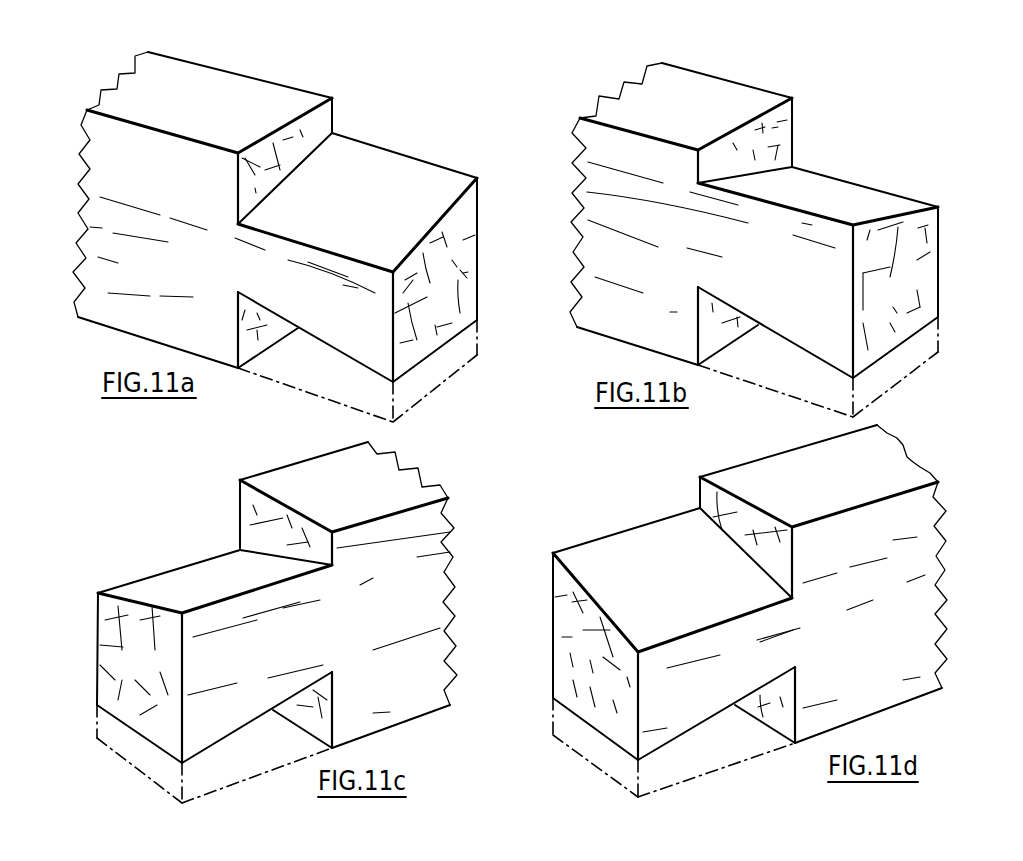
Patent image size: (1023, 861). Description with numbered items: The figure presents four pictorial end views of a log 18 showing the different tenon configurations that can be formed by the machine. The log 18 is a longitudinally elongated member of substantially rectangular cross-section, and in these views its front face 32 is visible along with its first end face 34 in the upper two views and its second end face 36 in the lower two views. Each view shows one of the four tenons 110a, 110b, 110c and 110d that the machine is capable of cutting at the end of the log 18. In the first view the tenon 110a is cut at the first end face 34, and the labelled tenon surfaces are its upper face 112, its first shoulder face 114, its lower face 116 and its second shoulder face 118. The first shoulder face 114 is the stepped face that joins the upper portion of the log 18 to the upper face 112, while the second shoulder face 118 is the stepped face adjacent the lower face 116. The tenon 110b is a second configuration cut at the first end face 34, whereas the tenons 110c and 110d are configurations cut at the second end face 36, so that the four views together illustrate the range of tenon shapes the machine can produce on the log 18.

In FIG. 11A, the log 18 is at (287, 96).
In FIG. 11B, the log 18 is at (603, 117).
In FIG. 11C, the log 18 is at (275, 475).
In FIG. 11D, the log 18 is at (737, 472).
In FIG. 11A, the front face 32 is at (120, 318).
In FIG. 11A, the first end face 34 is at (478, 237).
In FIG. 11B, the first end face 34 is at (937, 246).
In FIG. 11C, the second end face 36 is at (98, 657).
In FIG. 11D, the second end face 36 is at (565, 598).
In FIG. 11A, the tenon 110a is at (462, 302).
In FIG. 11B, the tenon 110b is at (937, 292).
In FIG. 11C, the tenon 110c is at (102, 613).
In FIG. 11D, the tenon 110d is at (587, 555).
In FIG. 11A, the upper face 112 is at (405, 162).
In FIG. 11A, the first shoulder face 114 is at (240, 177).
In FIG. 11A, the lower face 116 is at (320, 347).
In FIG. 11A, the second shoulder face 118 is at (242, 318).